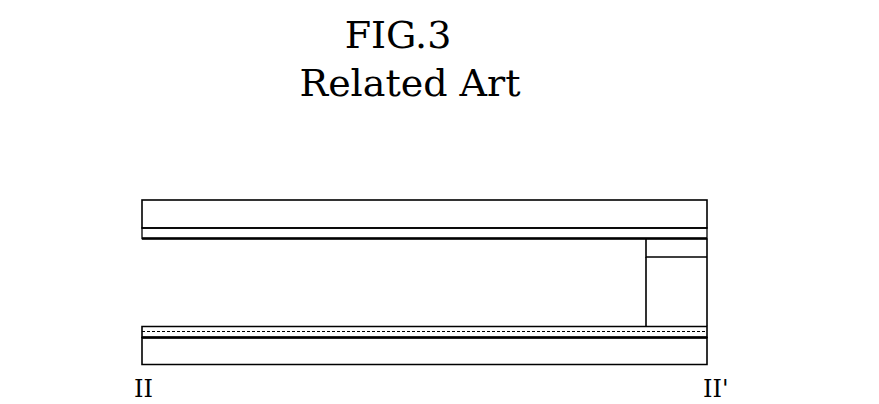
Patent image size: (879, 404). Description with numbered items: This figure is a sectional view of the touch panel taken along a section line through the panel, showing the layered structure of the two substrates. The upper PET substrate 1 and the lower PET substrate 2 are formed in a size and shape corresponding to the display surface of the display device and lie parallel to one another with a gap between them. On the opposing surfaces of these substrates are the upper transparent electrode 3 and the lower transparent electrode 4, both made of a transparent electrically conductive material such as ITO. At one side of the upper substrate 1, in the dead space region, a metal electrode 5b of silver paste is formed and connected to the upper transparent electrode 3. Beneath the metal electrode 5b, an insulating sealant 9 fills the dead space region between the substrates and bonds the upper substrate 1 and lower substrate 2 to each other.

The upper PET substrate 1 is at (150, 216).
The lower PET substrate 2 is at (150, 349).
The upper transparent electrode 3 is at (150, 236).
The lower transparent electrode 4 is at (226, 326).
The metal electrode 5b is at (702, 247).
The insulating sealant 9 is at (702, 286).
The indium tin oxide ITO is at (147, 329).